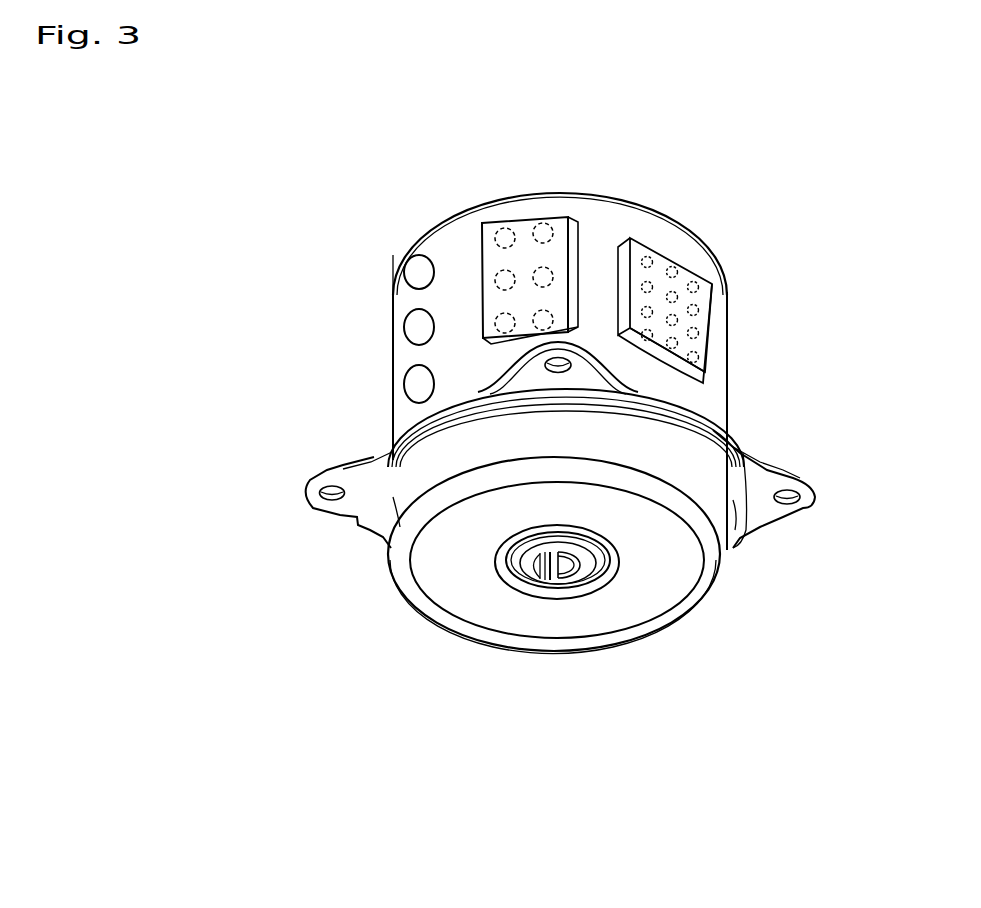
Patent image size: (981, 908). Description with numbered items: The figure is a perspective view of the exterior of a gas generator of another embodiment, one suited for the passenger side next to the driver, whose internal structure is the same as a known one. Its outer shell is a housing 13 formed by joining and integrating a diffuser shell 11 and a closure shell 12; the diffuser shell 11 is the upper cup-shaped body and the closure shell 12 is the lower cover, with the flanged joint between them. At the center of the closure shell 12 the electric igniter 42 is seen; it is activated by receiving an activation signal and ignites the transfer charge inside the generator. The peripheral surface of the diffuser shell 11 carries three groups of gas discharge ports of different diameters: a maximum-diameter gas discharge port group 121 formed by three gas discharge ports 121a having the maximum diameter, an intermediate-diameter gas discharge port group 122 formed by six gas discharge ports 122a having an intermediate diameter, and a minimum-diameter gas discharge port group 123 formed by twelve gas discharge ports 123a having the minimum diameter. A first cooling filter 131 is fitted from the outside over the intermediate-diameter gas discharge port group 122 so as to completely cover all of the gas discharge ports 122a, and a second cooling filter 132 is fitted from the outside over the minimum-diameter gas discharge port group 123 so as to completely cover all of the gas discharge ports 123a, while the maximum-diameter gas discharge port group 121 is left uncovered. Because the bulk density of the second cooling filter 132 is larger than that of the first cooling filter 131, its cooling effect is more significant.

The diffuser shell 11 is at (392, 385).
The closure shell 12 is at (392, 574).
The housing 13 is at (505, 371).
The maximum-diameter gas discharge port group 121 is at (344, 291).
The gas discharge ports 121a is at (417, 326).
The intermediate-diameter gas discharge port group 122 is at (553, 211).
The gas discharge ports 122a is at (503, 237).
The minimum-diameter gas discharge port group 123 is at (740, 270).
The gas discharge ports 123a is at (695, 308).
The first cooling filter 131 is at (488, 260).
The second cooling filter 132 is at (705, 353).
The electric igniter 42 is at (558, 578).